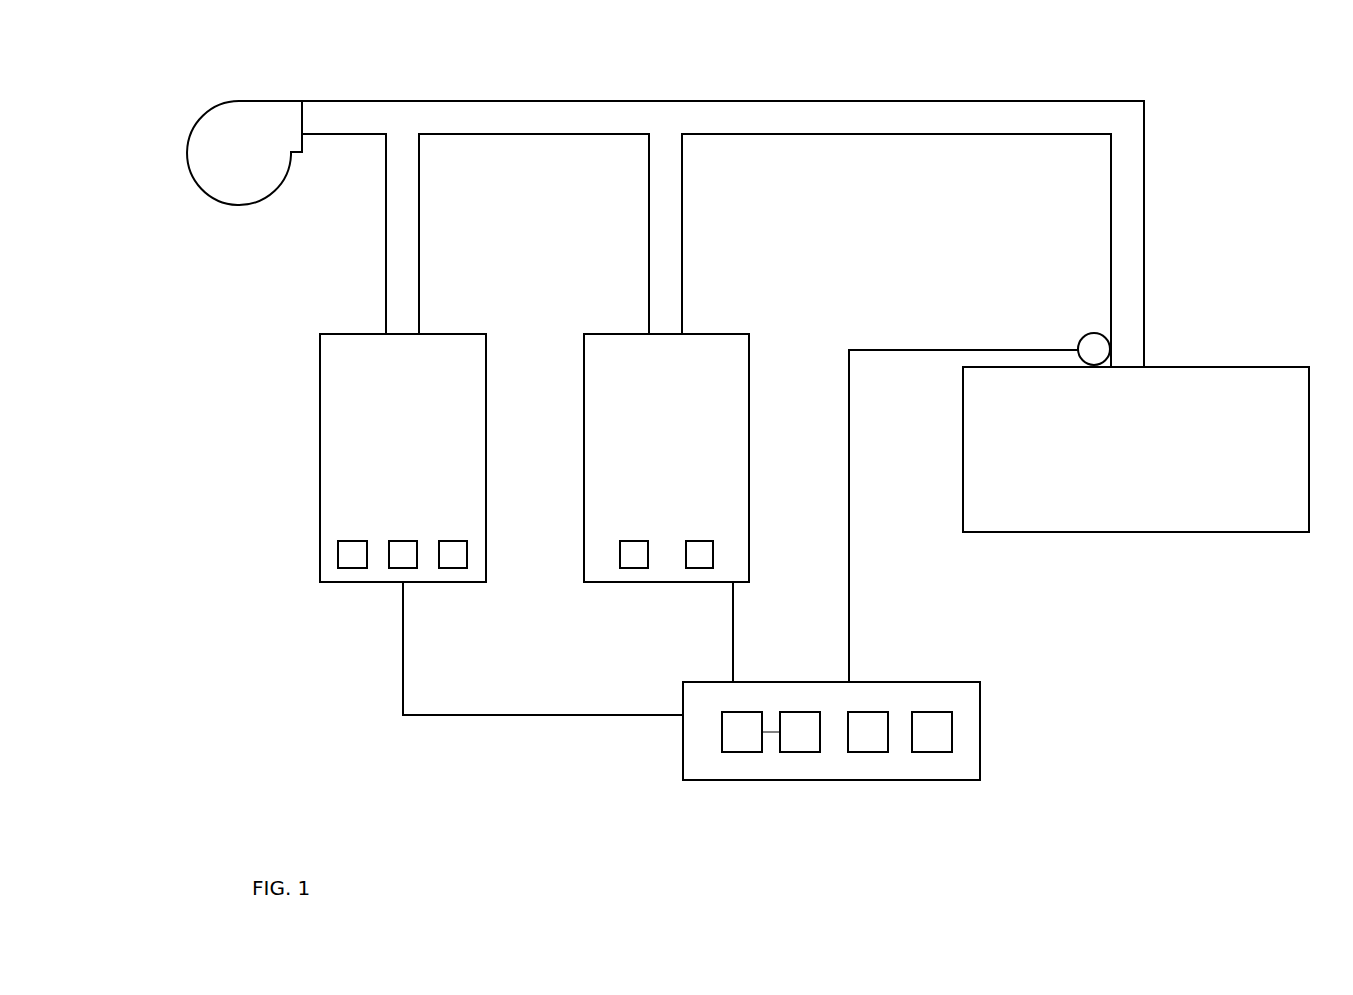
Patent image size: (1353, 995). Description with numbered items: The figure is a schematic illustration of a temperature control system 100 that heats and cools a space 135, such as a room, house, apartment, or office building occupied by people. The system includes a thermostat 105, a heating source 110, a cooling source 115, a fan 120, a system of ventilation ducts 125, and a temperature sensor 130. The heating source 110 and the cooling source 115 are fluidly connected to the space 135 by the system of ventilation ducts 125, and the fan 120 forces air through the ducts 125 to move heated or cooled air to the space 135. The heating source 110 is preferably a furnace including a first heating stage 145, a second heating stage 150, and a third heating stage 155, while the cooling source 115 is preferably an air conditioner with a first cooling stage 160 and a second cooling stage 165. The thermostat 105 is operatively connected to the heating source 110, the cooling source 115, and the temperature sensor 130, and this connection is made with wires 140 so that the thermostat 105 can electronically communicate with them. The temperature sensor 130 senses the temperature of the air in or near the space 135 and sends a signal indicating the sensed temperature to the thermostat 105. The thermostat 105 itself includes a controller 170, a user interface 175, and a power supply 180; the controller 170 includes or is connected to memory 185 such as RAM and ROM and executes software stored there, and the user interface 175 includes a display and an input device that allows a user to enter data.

The temperature control system 100 is at (1293, 168).
The thermostat 105 is at (727, 782).
The heating source 110 is at (318, 483).
The cooling source 115 is at (584, 532).
The fan 120 is at (269, 100).
The system of ventilation ducts 125 is at (583, 101).
The temperature sensor 130 is at (1095, 333).
The space 135 is at (1128, 533).
The wires 140 is at (518, 715).
The first heating stage 145 is at (338, 556).
The second heating stage 150 is at (389, 555).
The third heating stage 155 is at (439, 556).
The first cooling stage 160 is at (620, 555).
The second cooling stage 165 is at (686, 555).
The controller 170 is at (752, 753).
The user interface 175 is at (868, 752).
The power supply 180 is at (933, 752).
The memory 185 is at (802, 752).